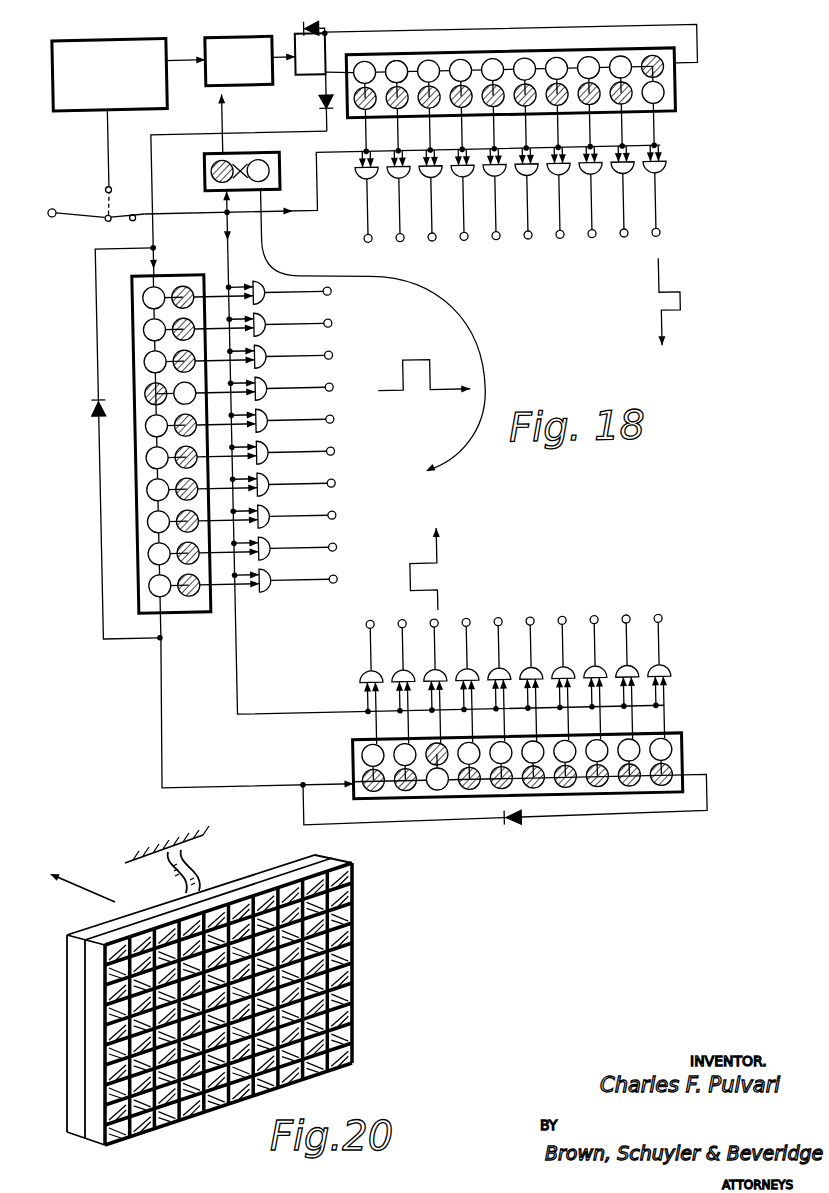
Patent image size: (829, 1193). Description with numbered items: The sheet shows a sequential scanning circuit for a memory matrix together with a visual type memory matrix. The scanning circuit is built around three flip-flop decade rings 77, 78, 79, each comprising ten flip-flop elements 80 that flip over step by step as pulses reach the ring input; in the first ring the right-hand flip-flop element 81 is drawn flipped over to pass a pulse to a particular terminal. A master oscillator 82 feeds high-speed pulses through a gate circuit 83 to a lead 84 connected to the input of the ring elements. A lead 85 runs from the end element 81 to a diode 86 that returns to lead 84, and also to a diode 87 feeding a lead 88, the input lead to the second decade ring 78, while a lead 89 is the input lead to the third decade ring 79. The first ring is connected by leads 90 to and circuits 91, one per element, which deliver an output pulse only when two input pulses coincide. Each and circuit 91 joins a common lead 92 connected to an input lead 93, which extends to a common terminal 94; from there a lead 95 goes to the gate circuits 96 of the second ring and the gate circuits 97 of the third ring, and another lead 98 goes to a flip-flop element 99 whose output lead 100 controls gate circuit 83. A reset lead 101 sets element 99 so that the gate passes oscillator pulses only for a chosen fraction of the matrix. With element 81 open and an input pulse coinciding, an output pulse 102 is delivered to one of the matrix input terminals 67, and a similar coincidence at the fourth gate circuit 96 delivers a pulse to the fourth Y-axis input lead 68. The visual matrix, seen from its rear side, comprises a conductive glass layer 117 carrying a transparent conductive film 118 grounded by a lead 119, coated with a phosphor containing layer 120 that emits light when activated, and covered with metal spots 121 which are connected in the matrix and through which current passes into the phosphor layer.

In FIG. 18, the input terminals 67 is at (623, 248).
In FIG. 18, the input leads 68 is at (325, 302).
In FIG. 18, the first decade ring 77 is at (674, 100).
In FIG. 18, the second decade ring 78 is at (164, 620).
In FIG. 18, the third decade ring 79 is at (337, 762).
In FIG. 18, the flip-flop elements 80 is at (412, 62).
In FIG. 18, the right-hand flip-flop element 81 is at (655, 62).
In FIG. 18, the master oscillator 82 is at (60, 114).
In FIG. 18, the gate circuit 83 is at (188, 95).
In FIG. 18, the lead 84 is at (294, 84).
In FIG. 18, the lead 85 is at (697, 64).
In FIG. 18, the diode 86 is at (313, 48).
In FIG. 18, the diode 87 is at (317, 114).
In FIG. 18, the lead 88 is at (150, 196).
In FIG. 18, the lead 89 is at (196, 790).
In FIG. 18, the leads 90 is at (358, 130).
In FIG. 18, the and circuits 91 is at (369, 207).
In FIG. 18, the common lead 92 is at (313, 200).
In FIG. 18, the input lead 93 is at (90, 214).
In FIG. 18, the common terminal 94 is at (225, 227).
In FIG. 18, the lead 95 is at (225, 259).
In FIG. 18, the gate circuits 96 is at (258, 314).
In FIG. 18, the gate circuits 97 is at (366, 661).
In FIG. 18, the lead 98 is at (224, 198).
In FIG. 18, the flip-flop element 99 is at (257, 165).
In FIG. 18, the output lead 100 is at (221, 116).
In FIG. 18, the reset lead 101 is at (436, 312).
In FIG. 18, the output pulse 102 is at (676, 300).
In FIG. 20, the conductive layer 117 is at (75, 1135).
In FIG. 20, the conductive film 118 is at (94, 1145).
In FIG. 20, the lead 119 is at (195, 861).
In FIG. 20, the phosphor containing layer 120 is at (349, 858).
In FIG. 20, the metal spots 121 is at (354, 893).